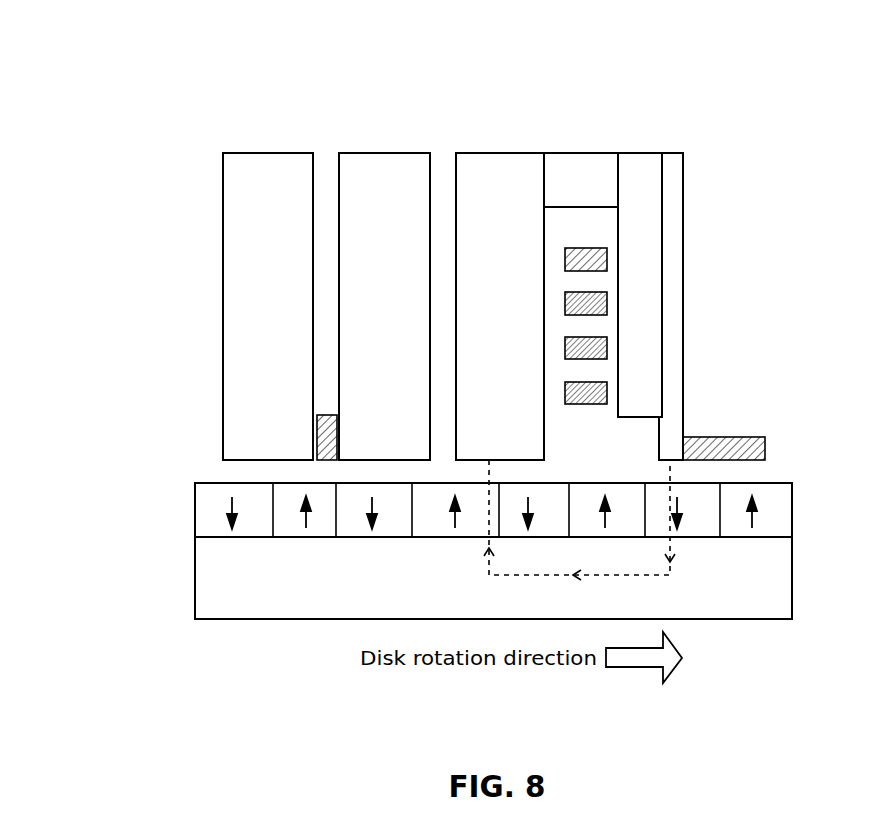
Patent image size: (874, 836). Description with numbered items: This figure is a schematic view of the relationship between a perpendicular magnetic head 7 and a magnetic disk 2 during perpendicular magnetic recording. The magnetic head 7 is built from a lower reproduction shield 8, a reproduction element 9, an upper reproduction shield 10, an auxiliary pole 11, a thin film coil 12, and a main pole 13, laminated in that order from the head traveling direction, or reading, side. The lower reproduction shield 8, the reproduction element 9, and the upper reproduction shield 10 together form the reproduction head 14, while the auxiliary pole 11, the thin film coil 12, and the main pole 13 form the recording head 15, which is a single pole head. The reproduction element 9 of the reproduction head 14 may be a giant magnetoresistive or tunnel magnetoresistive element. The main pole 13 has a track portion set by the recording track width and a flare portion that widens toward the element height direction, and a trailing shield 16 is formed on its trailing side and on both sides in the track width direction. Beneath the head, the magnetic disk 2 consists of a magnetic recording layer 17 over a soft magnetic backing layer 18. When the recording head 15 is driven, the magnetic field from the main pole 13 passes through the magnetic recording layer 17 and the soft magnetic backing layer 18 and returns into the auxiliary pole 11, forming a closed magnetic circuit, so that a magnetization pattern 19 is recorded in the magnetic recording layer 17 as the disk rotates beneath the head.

The magnetic disk 2 is at (185, 483).
The magnetic head 7 is at (621, 68).
The lower reproduction shield 8 is at (262, 259).
The reproduction element 9 is at (322, 430).
The upper reproduction shield 10 is at (371, 259).
The auxiliary pole 11 is at (483, 259).
The thin film coil 12 is at (600, 259).
The main pole 13 is at (670, 340).
The reproduction head 14 is at (427, 145).
The recording head 15 is at (455, 145).
The trailing shield 16 is at (718, 447).
The magnetic recording layer 17 is at (210, 490).
The soft magnetic backing layer 18 is at (438, 584).
The magnetization pattern 19 is at (785, 505).